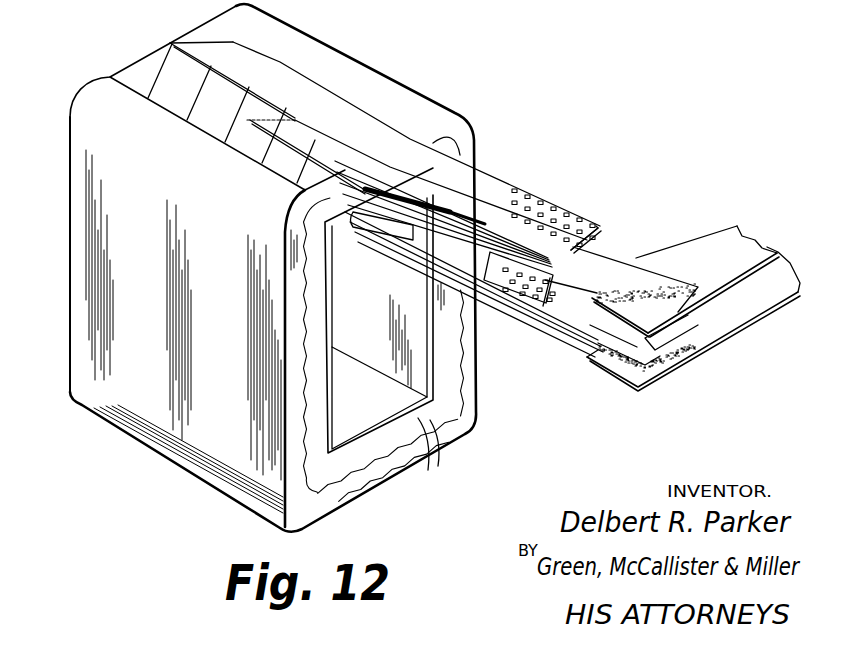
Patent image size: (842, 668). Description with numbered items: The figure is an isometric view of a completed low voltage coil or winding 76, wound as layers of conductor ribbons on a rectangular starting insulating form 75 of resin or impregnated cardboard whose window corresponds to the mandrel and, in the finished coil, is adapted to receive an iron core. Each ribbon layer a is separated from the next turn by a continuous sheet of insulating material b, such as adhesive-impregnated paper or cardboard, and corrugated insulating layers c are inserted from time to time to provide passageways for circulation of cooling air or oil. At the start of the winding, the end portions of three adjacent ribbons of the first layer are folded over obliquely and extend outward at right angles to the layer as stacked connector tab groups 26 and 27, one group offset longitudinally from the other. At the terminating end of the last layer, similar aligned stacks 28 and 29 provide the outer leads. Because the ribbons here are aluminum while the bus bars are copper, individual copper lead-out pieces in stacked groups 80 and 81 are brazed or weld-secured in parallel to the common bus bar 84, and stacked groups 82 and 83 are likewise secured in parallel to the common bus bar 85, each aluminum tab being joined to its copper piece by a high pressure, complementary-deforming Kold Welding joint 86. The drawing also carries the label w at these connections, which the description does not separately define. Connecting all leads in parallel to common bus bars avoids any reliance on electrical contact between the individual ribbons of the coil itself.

The starting connector tab group 26 is at (417, 218).
The second starting connector tab group 27 is at (380, 218).
The terminating conductor lead group 28 is at (479, 170).
The second terminating conductor lead group 29 is at (481, 204).
The starting insulating form 75 is at (333, 313).
The low voltage coil 76 is at (76, 229).
The copper connector tab group 80 is at (676, 329).
The copper connector tab group 81 is at (665, 368).
The copper connector tab group 82 is at (623, 256).
The copper connector tab group 83 is at (595, 262).
The bus bar 84 is at (753, 307).
The bus bar 85 is at (707, 240).
The joint 86 is at (567, 208).
The ribbon layer a is at (124, 54).
The sheet insulating material b is at (357, 58).
The corrugated insulating layers c is at (425, 425).
The weld joint w is at (680, 294).